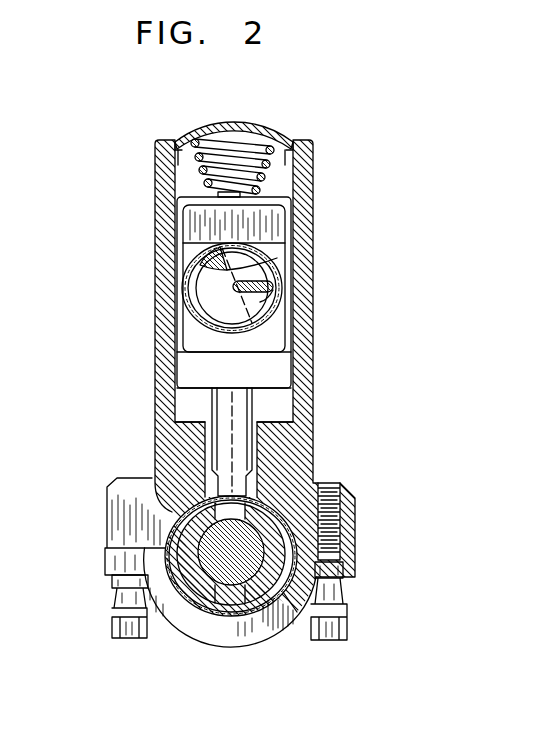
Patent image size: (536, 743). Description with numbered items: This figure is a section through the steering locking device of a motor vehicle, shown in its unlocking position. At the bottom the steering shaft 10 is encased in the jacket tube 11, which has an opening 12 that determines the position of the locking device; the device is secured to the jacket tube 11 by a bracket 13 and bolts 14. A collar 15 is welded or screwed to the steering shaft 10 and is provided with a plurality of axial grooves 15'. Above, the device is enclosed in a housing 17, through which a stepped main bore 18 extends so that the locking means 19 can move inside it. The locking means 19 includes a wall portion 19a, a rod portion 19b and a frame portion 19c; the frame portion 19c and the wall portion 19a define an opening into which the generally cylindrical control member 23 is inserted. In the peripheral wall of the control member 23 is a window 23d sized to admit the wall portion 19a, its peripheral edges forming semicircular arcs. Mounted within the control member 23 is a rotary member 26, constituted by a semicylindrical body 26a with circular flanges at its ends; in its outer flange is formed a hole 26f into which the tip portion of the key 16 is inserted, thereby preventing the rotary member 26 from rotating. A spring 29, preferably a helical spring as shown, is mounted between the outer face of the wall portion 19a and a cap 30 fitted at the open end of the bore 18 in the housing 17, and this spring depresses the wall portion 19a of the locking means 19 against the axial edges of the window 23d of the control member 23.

The steering shaft 10 is at (232, 585).
The jacket tube 11 is at (198, 610).
The opening 12 is at (295, 487).
The bracket 13 is at (243, 636).
The bolts 14 is at (115, 610).
The collar 15 is at (255, 406).
The axial grooves 15' is at (133, 503).
The key 16 is at (277, 283).
The housing 17 is at (300, 422).
The stepped main bore 18 is at (283, 170).
The locking means 19 is at (277, 378).
The wall portion 19a is at (280, 228).
The rod portion 19b is at (240, 452).
The frame portion 19c is at (284, 325).
The control member 23 is at (213, 296).
The window 23d is at (182, 262).
The rotary member 26 is at (212, 303).
The semicylindrical body 26a is at (226, 230).
The hole 26f is at (290, 298).
The spring 29 is at (175, 158).
The cap 30 is at (265, 136).